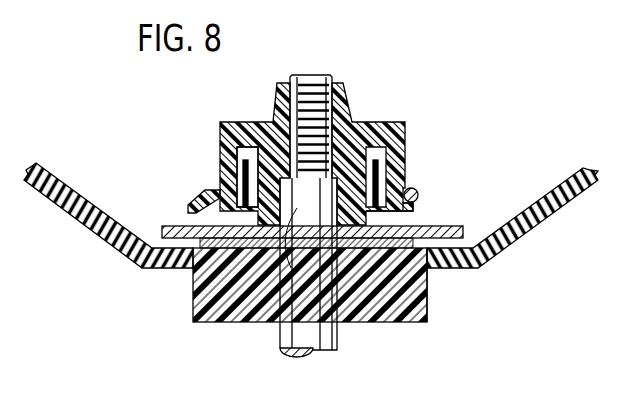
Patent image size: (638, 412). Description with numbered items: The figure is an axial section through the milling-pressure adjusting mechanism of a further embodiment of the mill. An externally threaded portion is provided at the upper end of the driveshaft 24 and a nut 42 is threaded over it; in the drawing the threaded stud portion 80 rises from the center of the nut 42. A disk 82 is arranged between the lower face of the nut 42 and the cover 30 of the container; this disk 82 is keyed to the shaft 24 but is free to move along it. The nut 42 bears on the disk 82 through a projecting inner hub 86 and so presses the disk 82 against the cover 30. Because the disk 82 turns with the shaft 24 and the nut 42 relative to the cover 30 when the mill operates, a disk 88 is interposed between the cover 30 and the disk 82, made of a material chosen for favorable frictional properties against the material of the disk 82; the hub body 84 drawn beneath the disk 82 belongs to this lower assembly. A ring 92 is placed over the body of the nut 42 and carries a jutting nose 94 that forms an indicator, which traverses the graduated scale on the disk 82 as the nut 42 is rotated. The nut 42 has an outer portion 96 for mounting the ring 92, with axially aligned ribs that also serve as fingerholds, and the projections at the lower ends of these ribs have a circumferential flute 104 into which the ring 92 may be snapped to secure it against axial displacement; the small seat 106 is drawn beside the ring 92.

The threaded stud 80 is at (348, 93).
The nut 42 is at (385, 120).
The projecting inner hub 86 is at (352, 193).
The ring 92 is at (416, 189).
The seal seat flange 106 is at (418, 203).
The disk 82 is at (455, 226).
The cover 30 is at (517, 240).
The disk 88 is at (413, 265).
The hub body 84 is at (283, 266).
The driveshaft 24 is at (338, 340).
The outer portion 96 is at (220, 190).
The circumferential flute 104 is at (215, 185).
The jutting nose 94 is at (193, 192).